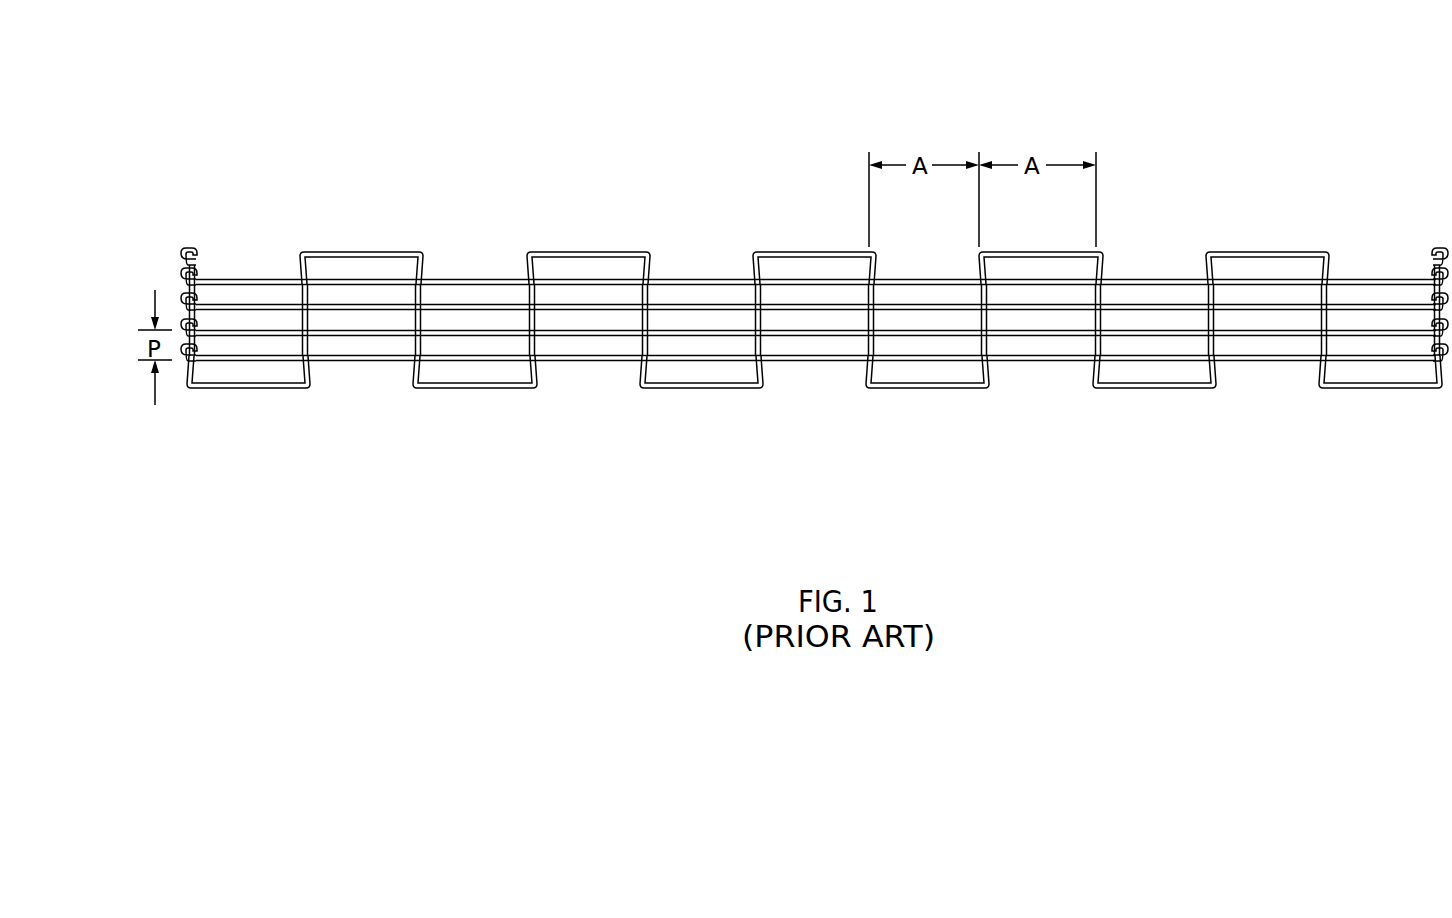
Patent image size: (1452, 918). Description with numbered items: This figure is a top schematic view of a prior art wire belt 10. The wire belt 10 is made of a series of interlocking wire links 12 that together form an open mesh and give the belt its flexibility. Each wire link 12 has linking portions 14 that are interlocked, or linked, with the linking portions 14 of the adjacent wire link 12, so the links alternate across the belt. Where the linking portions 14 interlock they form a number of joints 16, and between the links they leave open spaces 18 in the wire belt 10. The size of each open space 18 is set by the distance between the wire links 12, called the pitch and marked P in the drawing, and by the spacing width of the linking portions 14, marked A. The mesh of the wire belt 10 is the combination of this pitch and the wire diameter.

The wire belt 10 is at (765, 38).
The wire link 12 is at (352, 250).
The linking portion 14 is at (578, 250).
The joint 16 is at (670, 258).
The open space 18 is at (920, 372).